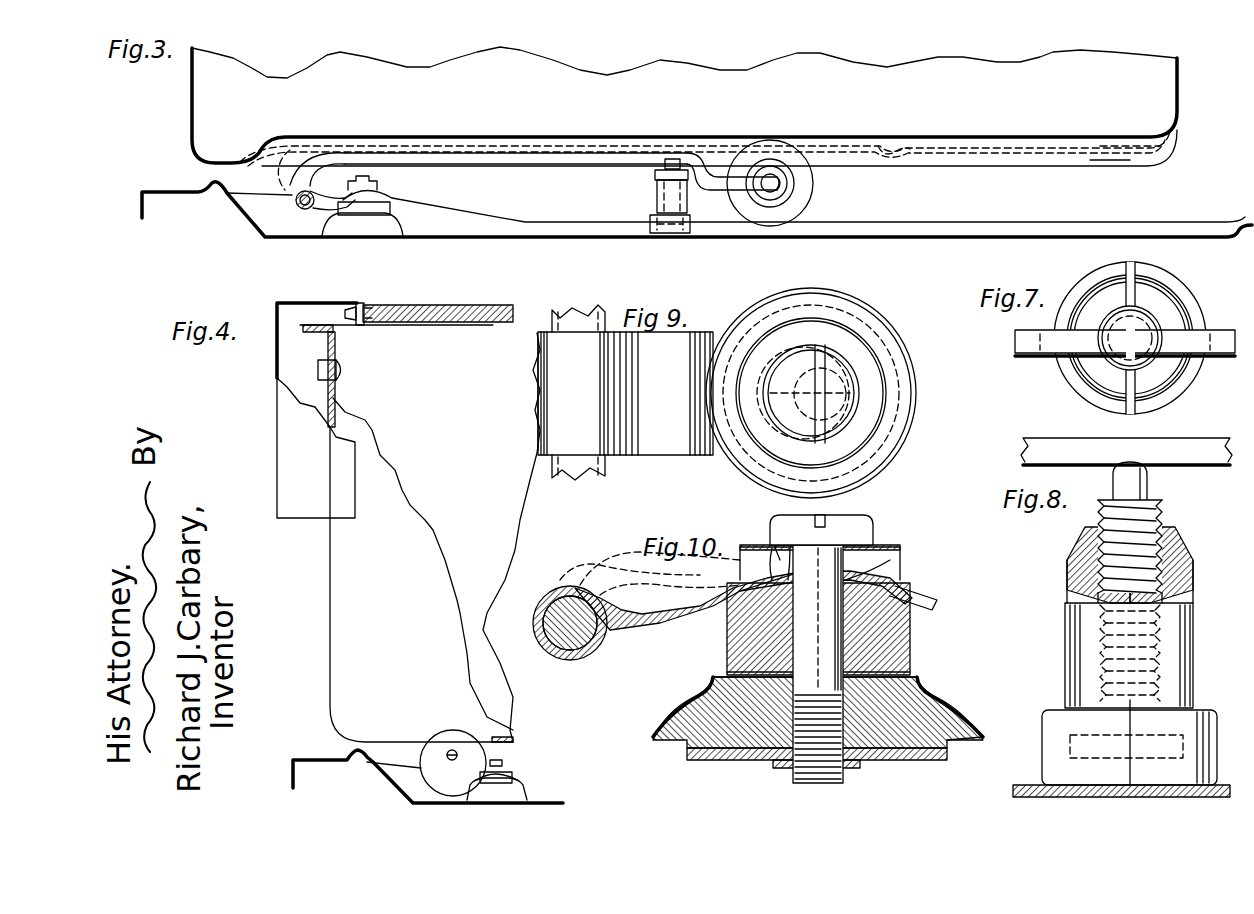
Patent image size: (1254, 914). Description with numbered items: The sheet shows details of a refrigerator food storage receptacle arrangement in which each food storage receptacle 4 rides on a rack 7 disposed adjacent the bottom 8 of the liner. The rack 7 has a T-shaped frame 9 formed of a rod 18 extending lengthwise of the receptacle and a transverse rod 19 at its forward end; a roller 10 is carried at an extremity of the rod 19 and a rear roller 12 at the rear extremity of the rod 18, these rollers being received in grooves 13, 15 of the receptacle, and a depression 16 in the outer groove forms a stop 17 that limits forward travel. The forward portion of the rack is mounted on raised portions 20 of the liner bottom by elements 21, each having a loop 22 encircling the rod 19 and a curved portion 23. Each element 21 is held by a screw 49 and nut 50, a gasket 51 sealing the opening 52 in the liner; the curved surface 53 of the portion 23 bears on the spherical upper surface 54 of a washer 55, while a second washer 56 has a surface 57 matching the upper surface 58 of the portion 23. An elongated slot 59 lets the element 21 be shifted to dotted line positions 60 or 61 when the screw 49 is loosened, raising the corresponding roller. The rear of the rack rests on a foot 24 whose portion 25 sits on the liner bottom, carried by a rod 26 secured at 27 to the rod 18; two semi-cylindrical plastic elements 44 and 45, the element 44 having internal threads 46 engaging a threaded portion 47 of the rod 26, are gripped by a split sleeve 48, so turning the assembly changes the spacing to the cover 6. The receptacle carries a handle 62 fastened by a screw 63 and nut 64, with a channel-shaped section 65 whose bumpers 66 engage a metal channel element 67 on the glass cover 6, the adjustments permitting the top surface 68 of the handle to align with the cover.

In FIG. 3, the food storage receptacle 4 is at (1180, 100).
In FIG. 4, the food storage receptacle 4 is at (343, 653).
In FIG. 4, the cover 6 is at (487, 305).
In FIG. 3, the rack 7 is at (535, 162).
In FIG. 3, the bottom of the liner 8 is at (583, 237).
In FIG. 4, the bottom of the liner 8 is at (565, 800).
In FIG. 8, the bottom of the liner 8 is at (1035, 785).
In FIG. 3, the T-shaped frame 9 is at (430, 152).
In FIG. 3, the roller 10 is at (288, 193).
In FIG. 3, the roller 12 is at (813, 193).
In FIG. 3, the groove 13 is at (1135, 145).
In FIG. 3, the groove 15 is at (1105, 158).
In FIG. 3, the depression 16 is at (950, 147).
In FIG. 3, the stop 17 is at (890, 148).
In FIG. 3, the rod 18 is at (583, 152).
In FIG. 7, the rod 18 is at (1222, 345).
In FIG. 8, the rod 18 is at (1203, 440).
In FIG. 3, the rod 19 is at (310, 208).
In FIG. 9, the rod 19 is at (572, 470).
In FIG. 10, the rod 19 is at (577, 660).
In FIG. 3, the raised portion 20 is at (373, 222).
In FIG. 4, the raised portion 20 is at (510, 792).
In FIG. 10, the raised portion 20 is at (688, 712).
In FIG. 3, the element 21 is at (328, 197).
In FIG. 9, the element 21 is at (660, 420).
In FIG. 10, the element 21 is at (665, 622).
In FIG. 3, the loop 22 is at (300, 203).
In FIG. 9, the loop 22 is at (545, 430).
In FIG. 10, the loop 22 is at (548, 605).
In FIG. 3, the curved portion 23 is at (383, 197).
In FIG. 10, the curved portion 23 is at (740, 583).
In FIG. 3, the foot 24 is at (655, 198).
In FIG. 8, the foot 24 is at (1197, 625).
In FIG. 8, the portion 25 is at (1068, 745).
In FIG. 3, the rod 26 is at (670, 158).
In FIG. 8, the rod 26 is at (1148, 483).
In FIG. 8, the weld 27 is at (1135, 462).
In FIG. 7, the semi-cylindrical element 44 is at (1105, 312).
In FIG. 8, the semi-cylindrical element 44 is at (1080, 545).
In FIG. 7, the semi-cylindrical element 45 is at (1143, 305).
In FIG. 8, the semi-cylindrical element 45 is at (1190, 543).
In FIG. 8, the internal threads 46 is at (1090, 580).
In FIG. 7, the threaded portion 47 is at (1148, 325).
In FIG. 8, the threaded portion 47 is at (1165, 508).
In FIG. 7, the split cylindrical sleeve 48 is at (1077, 378).
In FIG. 8, the split cylindrical sleeve 48 is at (1195, 577).
In FIG. 9, the screw 49 is at (858, 385).
In FIG. 10, the screw 49 is at (865, 523).
In FIG. 10, the nut 50 is at (875, 760).
In FIG. 10, the gasket 51 is at (947, 745).
In FIG. 10, the opening 52 is at (900, 655).
In FIG. 10, the curved surface 53 is at (900, 540).
In FIG. 10, the upper surface 54 is at (920, 590).
In FIG. 3, the washer 55 is at (385, 208).
In FIG. 4, the washer 55 is at (493, 777).
In FIG. 10, the washer 55 is at (895, 622).
In FIG. 3, the second washer 56 is at (372, 186).
In FIG. 10, the second washer 56 is at (902, 560).
In FIG. 10, the surface 57 is at (768, 548).
In FIG. 10, the upper surface 58 is at (791, 548).
In FIG. 9, the elongated slot 59 is at (795, 375).
In FIG. 10, the elongated slot 59 is at (775, 520).
In FIG. 10, the dotted line position 60 is at (560, 575).
In FIG. 10, the dotted line position 61 is at (608, 552).
In FIG. 4, the handle 62 is at (282, 405).
In FIG. 4, the screw 63 is at (343, 368).
In FIG. 4, the nut 64 is at (328, 365).
In FIG. 4, the channel-shaped section 65 is at (345, 305).
In FIG. 4, the bumper 66 is at (363, 303).
In FIG. 4, the metal channel element 67 is at (372, 305).
In FIG. 4, the top surface 68 is at (295, 301).